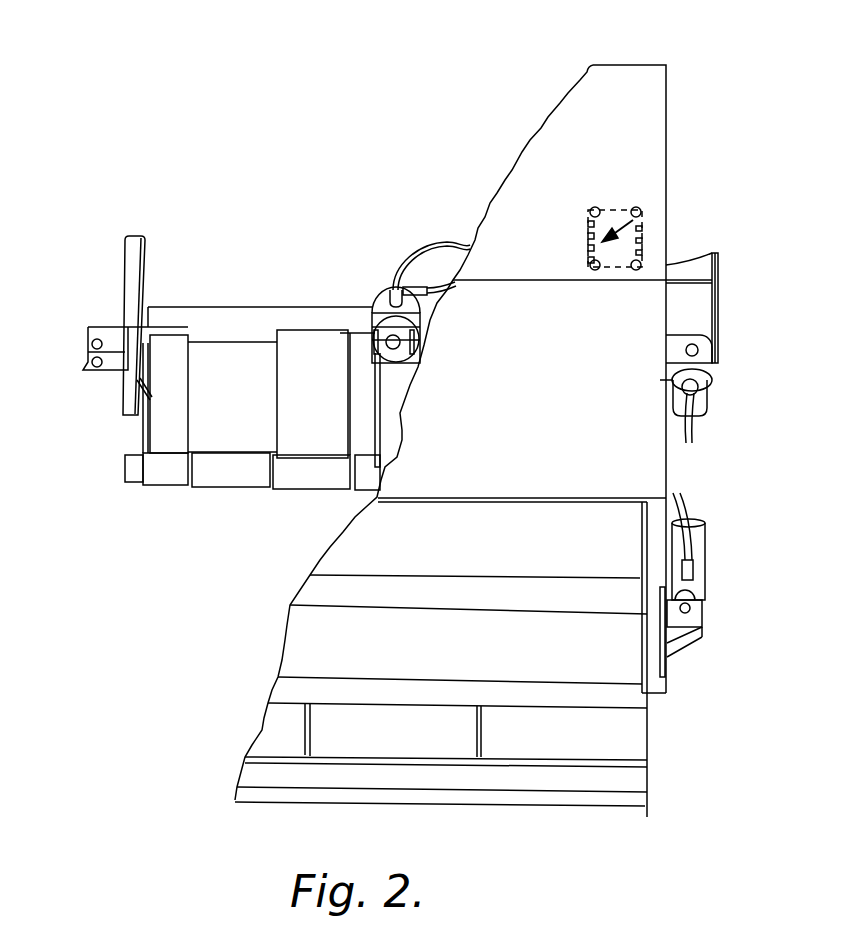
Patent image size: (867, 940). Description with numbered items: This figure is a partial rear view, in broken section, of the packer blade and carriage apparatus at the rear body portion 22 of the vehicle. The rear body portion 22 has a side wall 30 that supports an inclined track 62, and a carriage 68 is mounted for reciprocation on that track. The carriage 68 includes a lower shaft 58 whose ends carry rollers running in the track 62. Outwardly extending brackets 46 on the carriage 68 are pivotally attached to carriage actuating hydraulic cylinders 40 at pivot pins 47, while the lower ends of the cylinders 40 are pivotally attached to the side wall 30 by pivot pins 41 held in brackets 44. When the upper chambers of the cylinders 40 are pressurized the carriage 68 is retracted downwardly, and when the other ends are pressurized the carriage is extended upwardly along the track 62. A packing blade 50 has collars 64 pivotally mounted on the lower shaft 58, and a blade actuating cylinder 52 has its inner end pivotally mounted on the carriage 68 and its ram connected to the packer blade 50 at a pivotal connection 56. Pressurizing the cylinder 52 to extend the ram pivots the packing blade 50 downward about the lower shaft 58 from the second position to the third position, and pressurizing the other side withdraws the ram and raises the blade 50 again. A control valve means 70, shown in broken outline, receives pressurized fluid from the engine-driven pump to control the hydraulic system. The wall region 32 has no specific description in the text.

The rear body portion 22 is at (644, 60).
The side wall 30 is at (665, 465).
The side wall 32 is at (653, 150).
The carriage actuating hydraulic cylinder 40 is at (705, 405).
The pivot pin 41 is at (690, 608).
The bracket 44 is at (680, 633).
The outwardly extending bracket 46 is at (110, 327).
The pivot pin 47 is at (697, 350).
The packing blade 50 is at (370, 542).
The blade actuating cylinder 52 is at (373, 303).
The pivotal connection 56 is at (350, 340).
The lower shaft 58 is at (125, 468).
The inclined track 62 is at (137, 247).
The collar 64 is at (333, 475).
The carriage 68 is at (178, 298).
The control valve means 70 is at (638, 220).